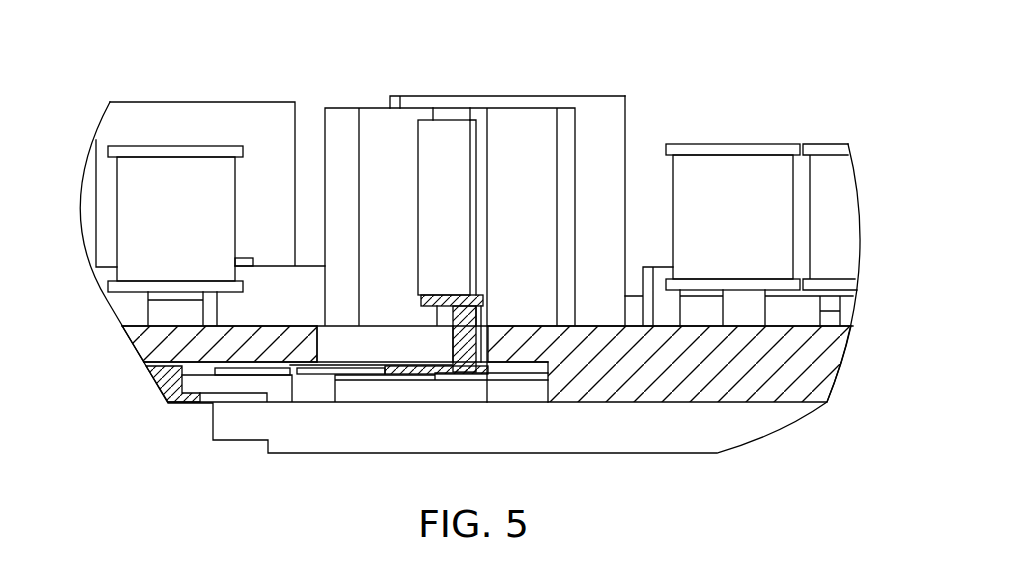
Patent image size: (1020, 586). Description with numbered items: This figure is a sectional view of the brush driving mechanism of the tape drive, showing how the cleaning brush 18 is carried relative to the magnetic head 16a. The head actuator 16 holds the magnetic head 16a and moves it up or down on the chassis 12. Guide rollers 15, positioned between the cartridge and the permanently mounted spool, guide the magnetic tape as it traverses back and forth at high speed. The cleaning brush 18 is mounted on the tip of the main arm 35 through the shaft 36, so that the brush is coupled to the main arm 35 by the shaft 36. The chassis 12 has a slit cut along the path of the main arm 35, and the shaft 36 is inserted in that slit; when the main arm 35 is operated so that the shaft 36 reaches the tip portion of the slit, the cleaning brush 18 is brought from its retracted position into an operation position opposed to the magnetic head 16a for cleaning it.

The chassis 12 is at (620, 402).
The rollers 15 is at (130, 176).
The head actuator 16 is at (576, 142).
The magnetic head 16a is at (458, 115).
The cleaning brush 18 is at (417, 178).
The main arm 35 is at (367, 377).
The shaft 36 is at (480, 335).